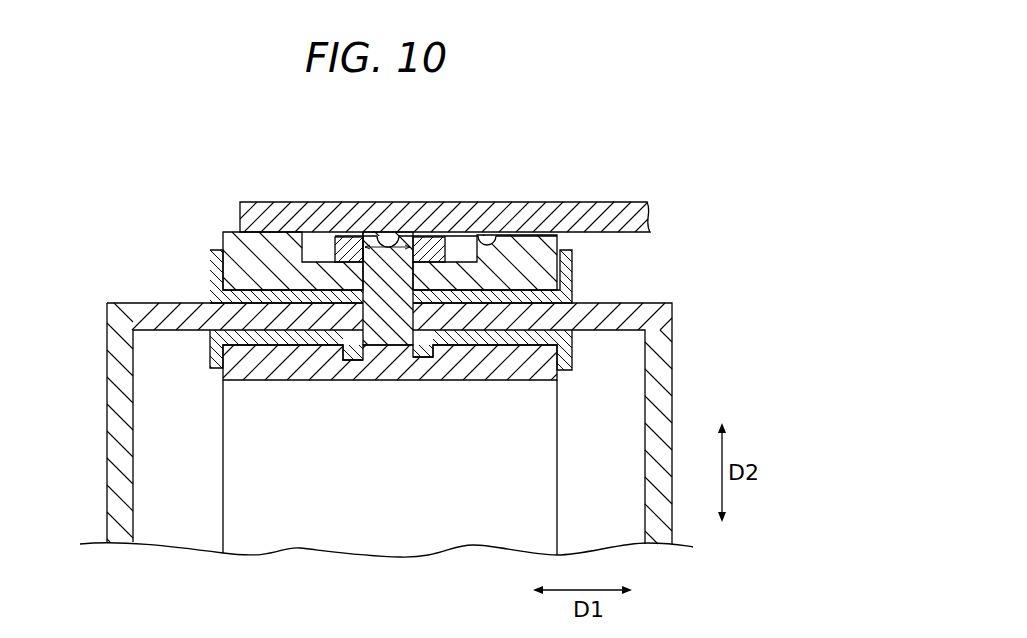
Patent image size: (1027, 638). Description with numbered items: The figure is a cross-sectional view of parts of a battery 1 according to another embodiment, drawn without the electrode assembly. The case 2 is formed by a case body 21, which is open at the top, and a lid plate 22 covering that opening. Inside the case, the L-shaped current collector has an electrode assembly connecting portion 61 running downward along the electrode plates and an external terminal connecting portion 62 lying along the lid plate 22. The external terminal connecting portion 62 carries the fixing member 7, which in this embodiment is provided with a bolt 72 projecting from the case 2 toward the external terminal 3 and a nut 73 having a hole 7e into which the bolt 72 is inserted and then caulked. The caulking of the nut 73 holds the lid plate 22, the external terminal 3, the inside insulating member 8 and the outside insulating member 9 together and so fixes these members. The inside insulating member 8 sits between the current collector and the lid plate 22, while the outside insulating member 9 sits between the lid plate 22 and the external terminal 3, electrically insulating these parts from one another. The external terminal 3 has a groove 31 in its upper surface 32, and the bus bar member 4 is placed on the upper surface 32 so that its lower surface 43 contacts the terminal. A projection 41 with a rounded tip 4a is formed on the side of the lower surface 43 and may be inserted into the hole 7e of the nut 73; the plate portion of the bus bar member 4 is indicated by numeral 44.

The battery 1 is at (94, 260).
The case 2 is at (763, 318).
The case body 21 is at (668, 360).
The lid plate 22 is at (663, 318).
The external terminal 3 is at (298, 122).
The groove 31 is at (310, 232).
The upper surface 32 is at (229, 232).
The bus bar member 4 is at (557, 125).
The projection 41 is at (402, 233).
The tip 4a is at (446, 235).
The lower surface 43 is at (498, 233).
The cover plate portion 44 is at (522, 203).
The fixing member 7 is at (388, 392).
The bolt 72 is at (358, 236).
The nut 73 is at (334, 236).
The hole 7e is at (387, 235).
The inside insulating member 8 is at (565, 362).
The outside insulating member 9 is at (574, 268).
The electrode assembly connecting portion 61 is at (313, 517).
The external terminal connecting portion 62 is at (497, 353).